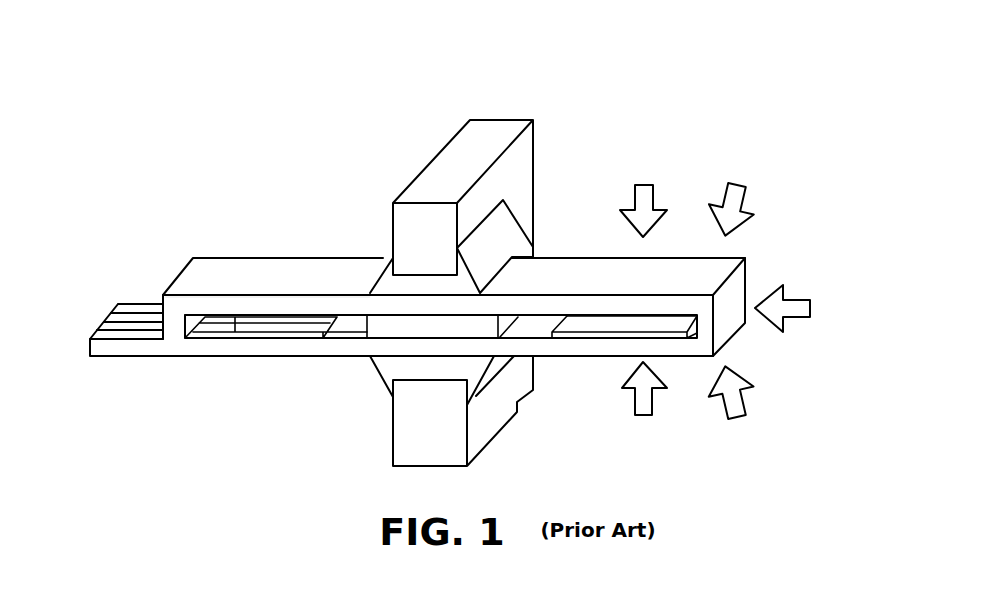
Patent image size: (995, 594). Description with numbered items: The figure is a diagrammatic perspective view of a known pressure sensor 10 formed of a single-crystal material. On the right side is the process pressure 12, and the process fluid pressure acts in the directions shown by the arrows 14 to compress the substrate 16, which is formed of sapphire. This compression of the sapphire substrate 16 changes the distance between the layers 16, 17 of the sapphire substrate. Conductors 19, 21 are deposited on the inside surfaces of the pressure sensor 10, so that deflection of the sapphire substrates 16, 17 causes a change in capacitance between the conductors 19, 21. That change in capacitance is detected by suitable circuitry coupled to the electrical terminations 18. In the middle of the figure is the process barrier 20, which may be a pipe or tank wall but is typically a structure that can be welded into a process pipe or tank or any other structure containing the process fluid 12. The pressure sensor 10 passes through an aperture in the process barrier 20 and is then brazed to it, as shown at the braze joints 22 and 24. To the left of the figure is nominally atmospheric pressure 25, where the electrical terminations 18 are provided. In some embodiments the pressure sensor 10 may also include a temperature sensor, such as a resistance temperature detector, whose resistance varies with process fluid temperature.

The pressure sensor 10 is at (333, 450).
The process pressure 12 is at (843, 301).
The arrows 14 is at (655, 193).
The substrate 16 is at (572, 308).
The sapphire substrate layer 17 is at (600, 345).
The electrical terminations 18 is at (118, 304).
The conductor 19 is at (560, 320).
The process barrier 20 is at (485, 132).
The conductor 21 is at (705, 272).
The braze 22 is at (372, 288).
The braze 24 is at (523, 217).
The atmospheric pressure 25 is at (40, 339).